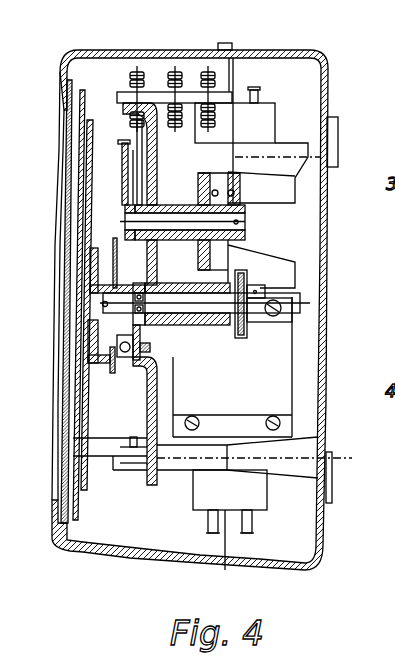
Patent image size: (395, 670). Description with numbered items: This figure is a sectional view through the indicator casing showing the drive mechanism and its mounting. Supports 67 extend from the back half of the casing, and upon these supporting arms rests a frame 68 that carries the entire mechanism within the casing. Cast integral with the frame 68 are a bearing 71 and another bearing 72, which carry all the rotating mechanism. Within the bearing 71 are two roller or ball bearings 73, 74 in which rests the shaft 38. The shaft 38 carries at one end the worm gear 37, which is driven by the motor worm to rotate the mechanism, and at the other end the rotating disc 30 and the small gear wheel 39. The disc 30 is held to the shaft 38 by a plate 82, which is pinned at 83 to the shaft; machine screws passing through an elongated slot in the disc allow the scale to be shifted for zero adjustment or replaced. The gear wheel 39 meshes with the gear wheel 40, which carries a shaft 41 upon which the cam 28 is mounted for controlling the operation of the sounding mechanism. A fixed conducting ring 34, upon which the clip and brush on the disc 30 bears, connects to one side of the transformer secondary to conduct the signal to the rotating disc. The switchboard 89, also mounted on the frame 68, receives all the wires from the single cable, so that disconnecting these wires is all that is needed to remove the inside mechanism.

The switchboard 89 is at (155, 97).
The rotating disc 30 is at (88, 127).
The supports 67 is at (282, 148).
The cam 28 is at (196, 187).
The gear wheel 40 is at (125, 193).
The shaft 41 is at (245, 215).
The bearing 72 is at (123, 227).
The roller or ball bearing 74 is at (115, 278).
The pin 83 is at (103, 304).
The plate 82 is at (88, 325).
The gear wheel 39 is at (130, 322).
The conducting ring 34 is at (115, 370).
The shaft 38 is at (245, 283).
The gear 37 is at (228, 320).
The roller or ball bearing 73 is at (250, 323).
The bearing 71 is at (150, 323).
The frame 68 is at (173, 395).